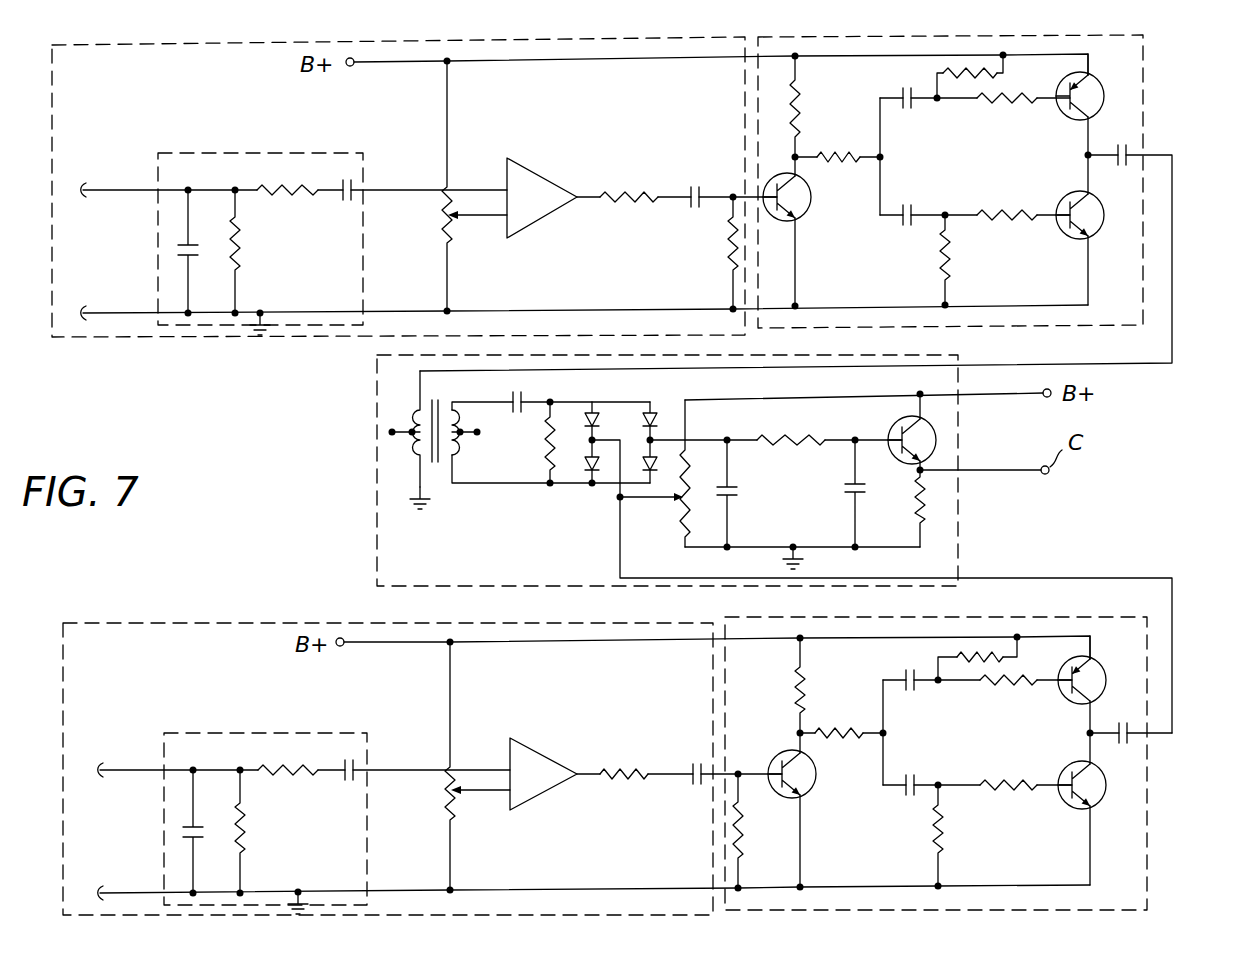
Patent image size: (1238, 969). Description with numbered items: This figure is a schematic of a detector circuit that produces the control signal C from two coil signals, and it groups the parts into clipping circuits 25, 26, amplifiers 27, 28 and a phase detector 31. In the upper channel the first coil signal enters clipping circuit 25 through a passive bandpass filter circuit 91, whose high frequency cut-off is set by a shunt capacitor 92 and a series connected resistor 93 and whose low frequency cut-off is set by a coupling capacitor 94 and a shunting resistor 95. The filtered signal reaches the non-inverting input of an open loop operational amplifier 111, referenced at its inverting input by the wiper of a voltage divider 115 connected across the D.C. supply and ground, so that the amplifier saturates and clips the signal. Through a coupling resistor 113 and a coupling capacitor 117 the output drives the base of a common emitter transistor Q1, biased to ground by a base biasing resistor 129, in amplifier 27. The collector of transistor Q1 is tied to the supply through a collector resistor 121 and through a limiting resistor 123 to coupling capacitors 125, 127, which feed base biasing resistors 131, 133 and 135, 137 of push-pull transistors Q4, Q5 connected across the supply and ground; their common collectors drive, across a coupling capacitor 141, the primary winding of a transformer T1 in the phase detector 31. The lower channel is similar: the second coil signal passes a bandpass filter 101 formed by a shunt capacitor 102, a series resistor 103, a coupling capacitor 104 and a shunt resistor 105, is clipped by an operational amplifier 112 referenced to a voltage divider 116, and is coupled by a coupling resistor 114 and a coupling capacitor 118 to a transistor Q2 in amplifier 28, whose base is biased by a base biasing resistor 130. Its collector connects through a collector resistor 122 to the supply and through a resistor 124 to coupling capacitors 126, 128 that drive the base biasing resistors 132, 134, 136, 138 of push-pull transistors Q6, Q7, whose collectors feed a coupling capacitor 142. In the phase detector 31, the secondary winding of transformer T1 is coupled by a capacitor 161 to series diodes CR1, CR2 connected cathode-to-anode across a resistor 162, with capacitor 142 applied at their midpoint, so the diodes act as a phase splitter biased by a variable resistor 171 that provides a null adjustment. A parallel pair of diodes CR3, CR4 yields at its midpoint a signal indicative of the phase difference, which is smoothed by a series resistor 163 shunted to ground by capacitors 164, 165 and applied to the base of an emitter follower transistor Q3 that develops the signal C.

The clipping circuit 25 is at (603, 40).
The amplifier 27 is at (975, 38).
The clipping circuit 26 is at (586, 617).
The amplifier 28 is at (1013, 606).
The phase detector 31 is at (958, 430).
The bandpass filter circuit 91 is at (250, 153).
The capacitor 92 is at (196, 243).
The series connected resistor 93 is at (293, 188).
The coupling capacitor 94 is at (352, 193).
The shunting resistor 95 is at (238, 258).
The operational amplifier 111 is at (548, 178).
The coupling resistor 113 is at (620, 197).
The voltage divider 115 is at (455, 192).
The coupling capacitor 117 is at (698, 187).
The base biasing resistor 129 is at (733, 246).
The collector resistor 121 is at (800, 100).
The limiting resistor 123 is at (828, 155).
The coupling capacitor 125 is at (912, 108).
The coupling capacitor 127 is at (918, 207).
The resistor 131 is at (985, 82).
The resistor 133 is at (1006, 108).
The resistor 135 is at (1018, 212).
The resistor 137 is at (948, 257).
The coupling capacitor 141 is at (1131, 146).
The transistor Q1 is at (813, 192).
The transistor Q4 is at (1104, 93).
The transistor Q5 is at (1105, 213).
The transformer T1 is at (438, 465).
The capacitor 161 is at (519, 395).
The resistor 162 is at (542, 445).
The diode CR1 is at (598, 415).
The diode CR2 is at (586, 468).
The diode CR3 is at (660, 415).
The diode CR4 is at (660, 462).
The variable resistor 171 is at (680, 520).
The series resistor 163 is at (798, 440).
The capacitor 164 is at (738, 490).
The capacitor 165 is at (848, 492).
The transistor Q3 is at (935, 449).
The bandpass filter 101 is at (258, 733).
The shunt capacitor 102 is at (190, 826).
The series resistor 103 is at (288, 768).
The coupling capacitor 104 is at (355, 773).
The shunt resistor 105 is at (240, 828).
The operational amplifier 112 is at (540, 750).
The coupling resistor 114 is at (603, 770).
The voltage divider 116 is at (455, 770).
The coupling capacitor 118 is at (693, 782).
The base biasing resistor 130 is at (745, 819).
The collector resistor 122 is at (800, 678).
The resistor 124 is at (833, 726).
The coupling capacitor 126 is at (915, 686).
The coupling capacitor 128 is at (914, 782).
The resistor 132 is at (958, 658).
The resistor 134 is at (1008, 685).
The resistor 136 is at (1008, 783).
The resistor 138 is at (952, 832).
The coupling capacitor 142 is at (1135, 740).
The transistor Q2 is at (818, 775).
The transistor Q6 is at (1106, 678).
The transistor Q7 is at (1106, 788).